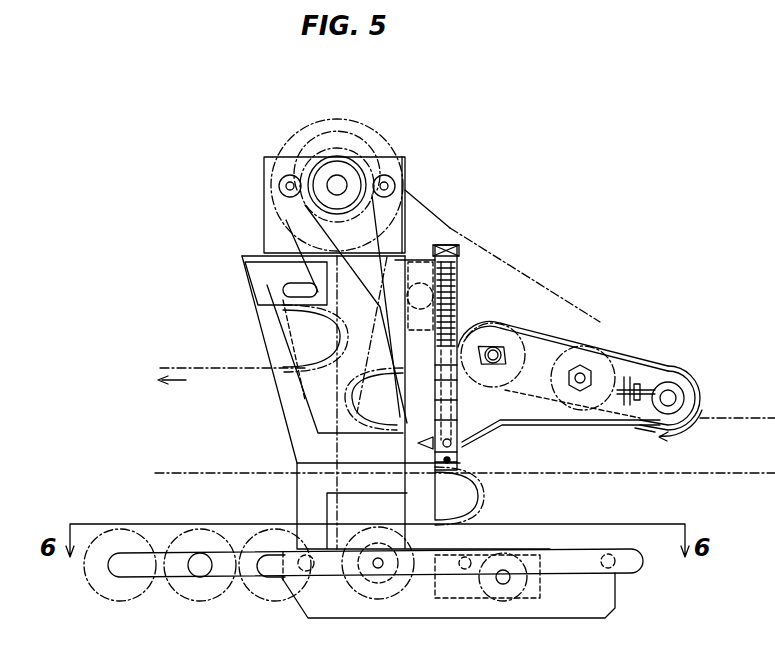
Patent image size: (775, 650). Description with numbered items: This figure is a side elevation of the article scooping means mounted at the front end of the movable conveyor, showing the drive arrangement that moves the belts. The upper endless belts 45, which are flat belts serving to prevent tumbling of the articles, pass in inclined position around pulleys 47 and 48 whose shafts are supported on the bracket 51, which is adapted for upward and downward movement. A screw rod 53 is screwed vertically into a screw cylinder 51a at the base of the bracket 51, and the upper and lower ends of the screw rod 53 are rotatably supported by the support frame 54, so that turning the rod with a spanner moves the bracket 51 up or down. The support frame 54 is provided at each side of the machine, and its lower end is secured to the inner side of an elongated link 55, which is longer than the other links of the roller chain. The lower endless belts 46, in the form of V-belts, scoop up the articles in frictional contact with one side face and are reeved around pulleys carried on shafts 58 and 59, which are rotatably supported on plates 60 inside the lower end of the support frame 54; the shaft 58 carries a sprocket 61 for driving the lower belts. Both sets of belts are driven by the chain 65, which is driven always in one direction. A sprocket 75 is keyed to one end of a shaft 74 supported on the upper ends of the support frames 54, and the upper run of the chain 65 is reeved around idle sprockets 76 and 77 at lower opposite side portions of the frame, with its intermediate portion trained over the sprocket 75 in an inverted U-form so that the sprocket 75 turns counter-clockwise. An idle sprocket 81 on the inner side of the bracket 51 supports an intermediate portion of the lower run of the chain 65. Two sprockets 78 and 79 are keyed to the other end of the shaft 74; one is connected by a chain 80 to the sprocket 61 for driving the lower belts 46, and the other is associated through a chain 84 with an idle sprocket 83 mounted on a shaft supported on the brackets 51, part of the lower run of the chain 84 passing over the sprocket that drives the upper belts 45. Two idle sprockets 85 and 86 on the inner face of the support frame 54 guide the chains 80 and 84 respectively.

The upper endless belts 45 is at (637, 368).
The lower endless belts 46 is at (380, 527).
The pulley 47 is at (493, 327).
The pulley 48 is at (693, 378).
The bracket 51 is at (528, 420).
The screw cylinder 51a is at (462, 414).
The screw rod 53 is at (457, 283).
The support frame 54 is at (286, 435).
The elongated link 55 is at (583, 550).
The shaft 58 is at (392, 590).
The shaft 59 is at (505, 598).
The plate 60 is at (562, 617).
The sprocket 61 is at (367, 598).
The chain 65 is at (222, 368).
The shaft 74 is at (342, 182).
The sprocket 75 is at (296, 134).
The idle sprocket 76 is at (407, 400).
The idle sprocket 77 is at (290, 342).
The sprocket 78 is at (323, 146).
The sprocket 79 is at (350, 145).
The chain 80 is at (335, 396).
The idle sprocket 81 is at (480, 495).
The idle sprocket 83 is at (537, 337).
The chain 84 is at (478, 301).
The idle sprocket 85 is at (265, 266).
The idle sprocket 86 is at (418, 257).